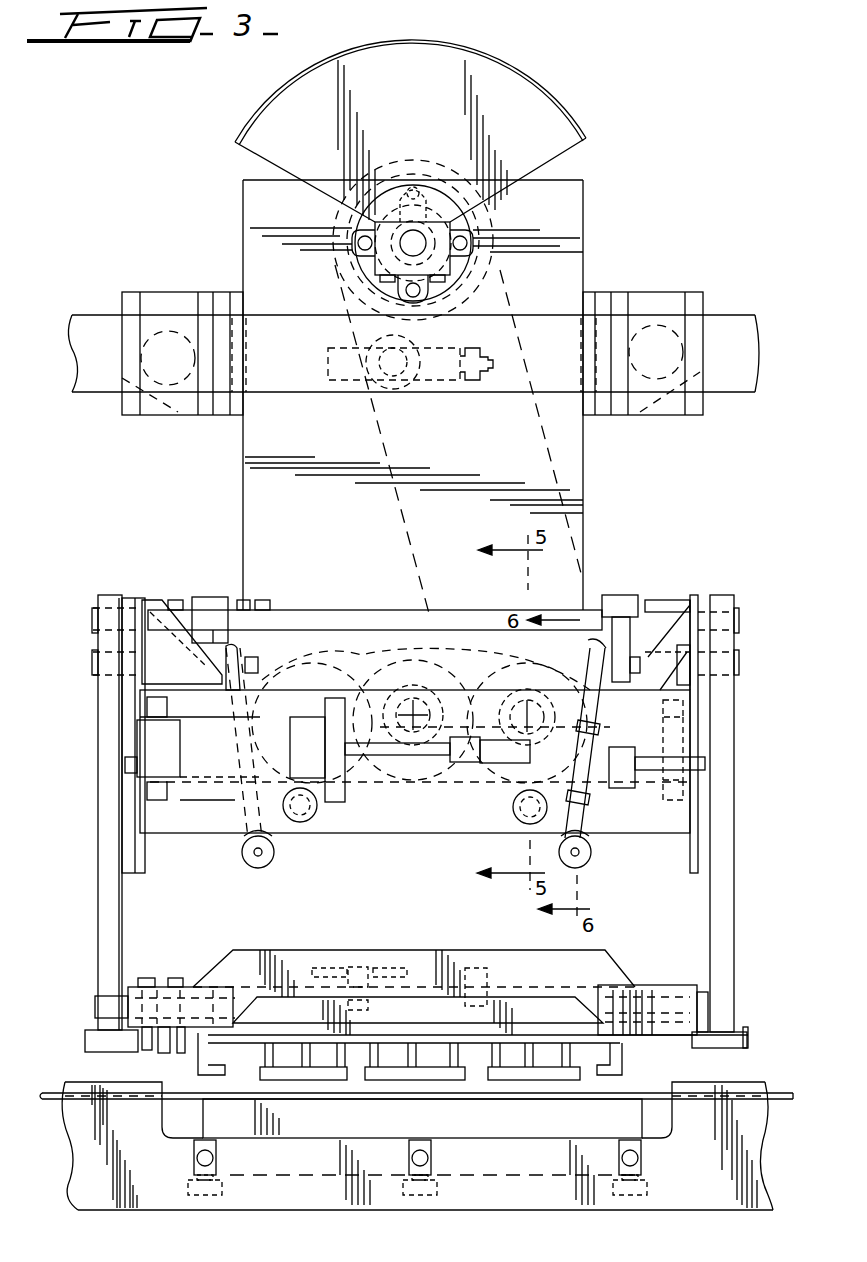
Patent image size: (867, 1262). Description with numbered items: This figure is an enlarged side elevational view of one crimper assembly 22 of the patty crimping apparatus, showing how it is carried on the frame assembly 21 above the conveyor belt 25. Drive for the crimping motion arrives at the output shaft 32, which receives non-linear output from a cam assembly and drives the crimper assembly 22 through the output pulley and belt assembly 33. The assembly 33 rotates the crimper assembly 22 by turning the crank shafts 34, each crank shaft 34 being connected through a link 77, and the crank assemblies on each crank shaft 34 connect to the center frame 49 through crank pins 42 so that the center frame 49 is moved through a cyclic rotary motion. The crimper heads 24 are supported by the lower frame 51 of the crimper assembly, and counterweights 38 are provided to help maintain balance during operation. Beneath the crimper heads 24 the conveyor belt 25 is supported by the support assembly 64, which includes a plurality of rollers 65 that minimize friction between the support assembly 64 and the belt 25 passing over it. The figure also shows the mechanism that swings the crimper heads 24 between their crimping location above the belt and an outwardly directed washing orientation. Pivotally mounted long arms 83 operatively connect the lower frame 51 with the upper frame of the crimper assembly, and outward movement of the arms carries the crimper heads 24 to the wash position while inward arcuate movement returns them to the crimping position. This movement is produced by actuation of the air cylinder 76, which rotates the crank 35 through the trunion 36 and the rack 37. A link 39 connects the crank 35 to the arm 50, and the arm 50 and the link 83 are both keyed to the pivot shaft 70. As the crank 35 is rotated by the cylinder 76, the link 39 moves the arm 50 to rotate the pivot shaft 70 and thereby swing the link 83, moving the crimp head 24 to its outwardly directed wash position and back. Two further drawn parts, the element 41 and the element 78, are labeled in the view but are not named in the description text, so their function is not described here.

The frame assembly 21 is at (712, 310).
The crimper assembly 22 is at (105, 582).
The crimper head 24 is at (430, 1080).
The conveyor belt 25 is at (778, 1100).
The output shaft 32 is at (416, 244).
The output pulley and belt assembly 33 is at (572, 484).
The crank shaft 34 is at (498, 655).
The crank 35 is at (248, 864).
The trunion 36 is at (483, 765).
The rack 37 is at (705, 765).
The counterweight 38 is at (412, 112).
The link 39 is at (560, 838).
The arm 41 is at (216, 844).
The crank pin 42 is at (312, 812).
The center frame 49 is at (690, 733).
The arm 50 is at (618, 625).
The lower frame 51 is at (590, 615).
The support assembly 64 is at (370, 1127).
The roller 65 is at (615, 1095).
The pivot shaft 70 is at (286, 620).
The air cylinder 76 is at (178, 733).
The link 77 is at (318, 628).
The belt 78 is at (412, 625).
The long arm 83 is at (98, 920).